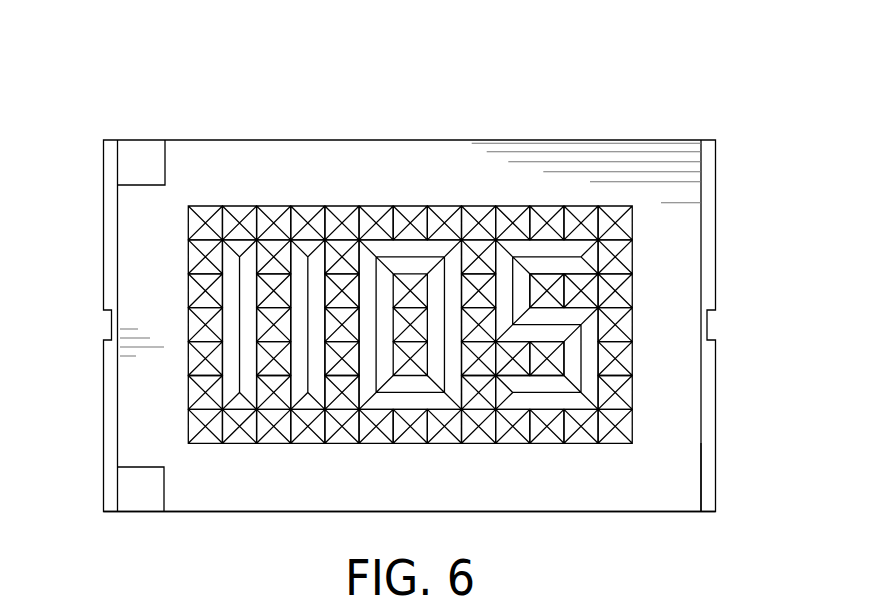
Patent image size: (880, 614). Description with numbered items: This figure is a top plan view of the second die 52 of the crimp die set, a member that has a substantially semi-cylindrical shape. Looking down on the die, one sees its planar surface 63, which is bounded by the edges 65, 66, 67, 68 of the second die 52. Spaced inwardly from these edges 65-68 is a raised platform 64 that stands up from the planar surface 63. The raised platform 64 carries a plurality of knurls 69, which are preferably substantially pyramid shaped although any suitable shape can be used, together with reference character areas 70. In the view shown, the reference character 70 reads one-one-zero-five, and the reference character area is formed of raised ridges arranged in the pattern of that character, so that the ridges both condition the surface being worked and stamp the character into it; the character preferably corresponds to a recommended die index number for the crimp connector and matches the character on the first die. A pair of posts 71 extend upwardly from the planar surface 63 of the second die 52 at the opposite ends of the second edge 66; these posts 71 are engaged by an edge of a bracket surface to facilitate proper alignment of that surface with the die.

The second die 52 is at (283, 140).
The planar surface 63 is at (670, 478).
The raised platform 64 is at (433, 444).
The edge 65 is at (565, 512).
The second edge 66 is at (118, 377).
The edge 67 is at (500, 138).
The edge 68 is at (701, 244).
The knurls 69 is at (208, 213).
The reference character area 70 is at (373, 237).
The posts 71 is at (143, 185).